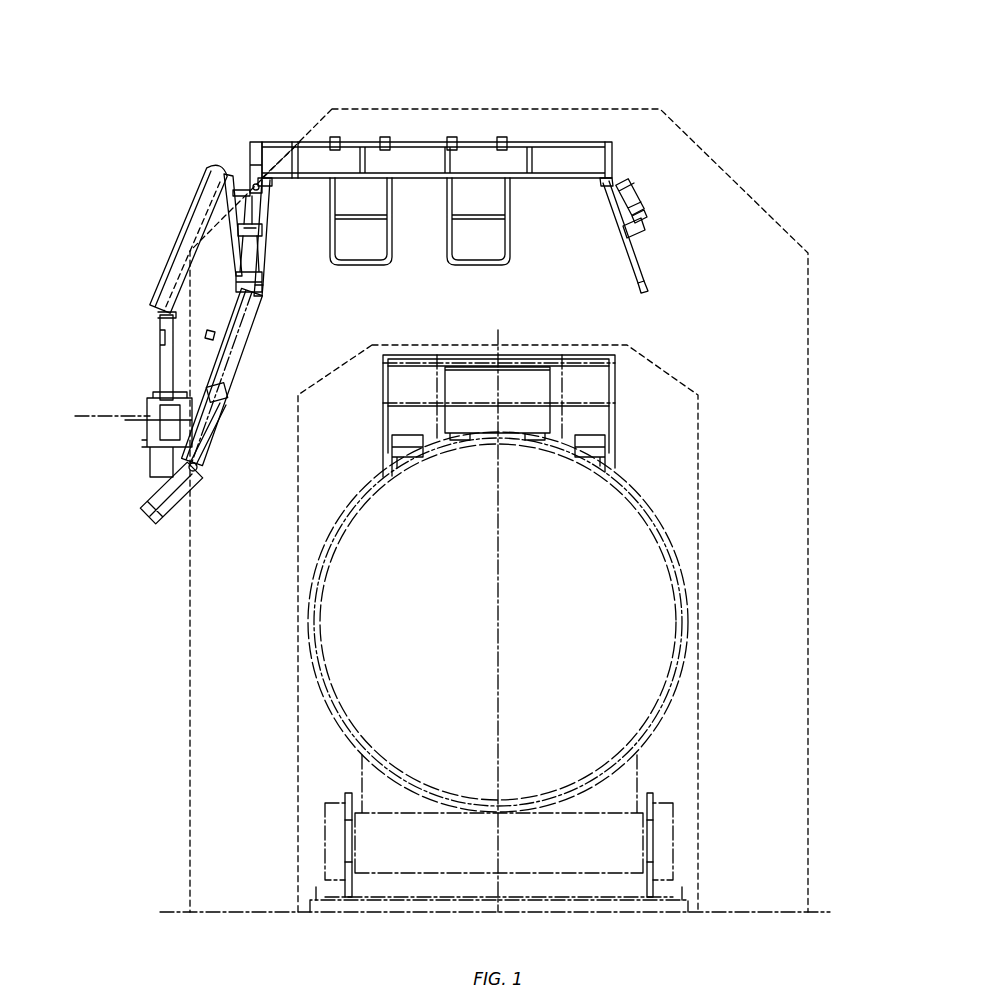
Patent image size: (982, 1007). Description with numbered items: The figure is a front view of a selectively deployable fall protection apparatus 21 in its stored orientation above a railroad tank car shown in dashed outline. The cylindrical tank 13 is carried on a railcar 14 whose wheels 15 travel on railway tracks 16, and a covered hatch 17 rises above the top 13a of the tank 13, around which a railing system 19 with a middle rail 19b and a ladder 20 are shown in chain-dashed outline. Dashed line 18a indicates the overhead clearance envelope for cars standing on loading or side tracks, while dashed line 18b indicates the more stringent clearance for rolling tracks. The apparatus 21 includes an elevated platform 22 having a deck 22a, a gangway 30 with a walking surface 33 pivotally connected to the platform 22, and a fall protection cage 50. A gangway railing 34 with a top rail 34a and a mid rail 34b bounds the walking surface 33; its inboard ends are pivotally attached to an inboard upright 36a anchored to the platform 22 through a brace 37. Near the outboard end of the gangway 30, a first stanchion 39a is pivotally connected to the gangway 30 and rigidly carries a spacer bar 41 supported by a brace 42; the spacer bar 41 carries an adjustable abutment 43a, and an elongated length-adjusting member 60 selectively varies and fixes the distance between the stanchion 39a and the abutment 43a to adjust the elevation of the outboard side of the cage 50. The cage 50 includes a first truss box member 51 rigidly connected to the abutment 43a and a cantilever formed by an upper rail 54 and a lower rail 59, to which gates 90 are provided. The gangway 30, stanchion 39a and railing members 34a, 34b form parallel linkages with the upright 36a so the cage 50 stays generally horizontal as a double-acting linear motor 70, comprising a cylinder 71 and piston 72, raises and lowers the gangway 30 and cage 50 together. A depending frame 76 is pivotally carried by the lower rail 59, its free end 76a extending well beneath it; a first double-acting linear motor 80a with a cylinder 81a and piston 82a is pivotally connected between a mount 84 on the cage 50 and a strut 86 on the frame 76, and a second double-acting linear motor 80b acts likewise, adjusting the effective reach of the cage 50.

The apparatus 21 is at (150, 50).
The tank 13 is at (684, 612).
The top of the tank 13a is at (600, 438).
The railcar 14 is at (360, 768).
The wheels 15 is at (330, 830).
The railway tracks 16 is at (320, 892).
The covered hatch 17 is at (540, 384).
The overhead clearance outline 18a is at (528, 345).
The overhead clearance outline for rolling tracks 18b is at (500, 109).
The railing system 19 is at (616, 374).
The middle rail 19b is at (428, 400).
The ladder 20 is at (322, 506).
The elevated platform 22 is at (90, 420).
The deck 22a is at (112, 414).
The gangway 30 is at (232, 378).
The walking surface 33 is at (212, 336).
The gangway railing 34 is at (170, 219).
The top rail 34a is at (152, 300).
The mid rail 34b is at (192, 282).
The inboard upright 36a is at (165, 345).
The brace 37 is at (148, 432).
The first stanchion 39a is at (232, 210).
The spacer bar 41 is at (232, 236).
The brace 42 is at (264, 276).
The adjustable abutment 43a is at (253, 155).
The fall protection cage 50 is at (607, 127).
The first truss box member 51 is at (262, 165).
The upper rail 54 is at (545, 142).
The lower rail 59 is at (565, 179).
The elongated length-adjusting member 60 is at (237, 165).
The double-acting linear motor 70 is at (224, 451).
The cylinder 71 is at (165, 530).
The piston 72 is at (216, 430).
The depending frame 76 is at (640, 265).
The free end of the depending frame 76a is at (643, 290).
The first double-acting linear motor 80a is at (697, 187).
The second double-acting linear motor 80b is at (272, 204).
The cylinder 81a is at (640, 194).
The piston 82a is at (645, 220).
The mount 84 is at (297, 142).
The strut 86 is at (632, 232).
The gate 90 is at (370, 266).